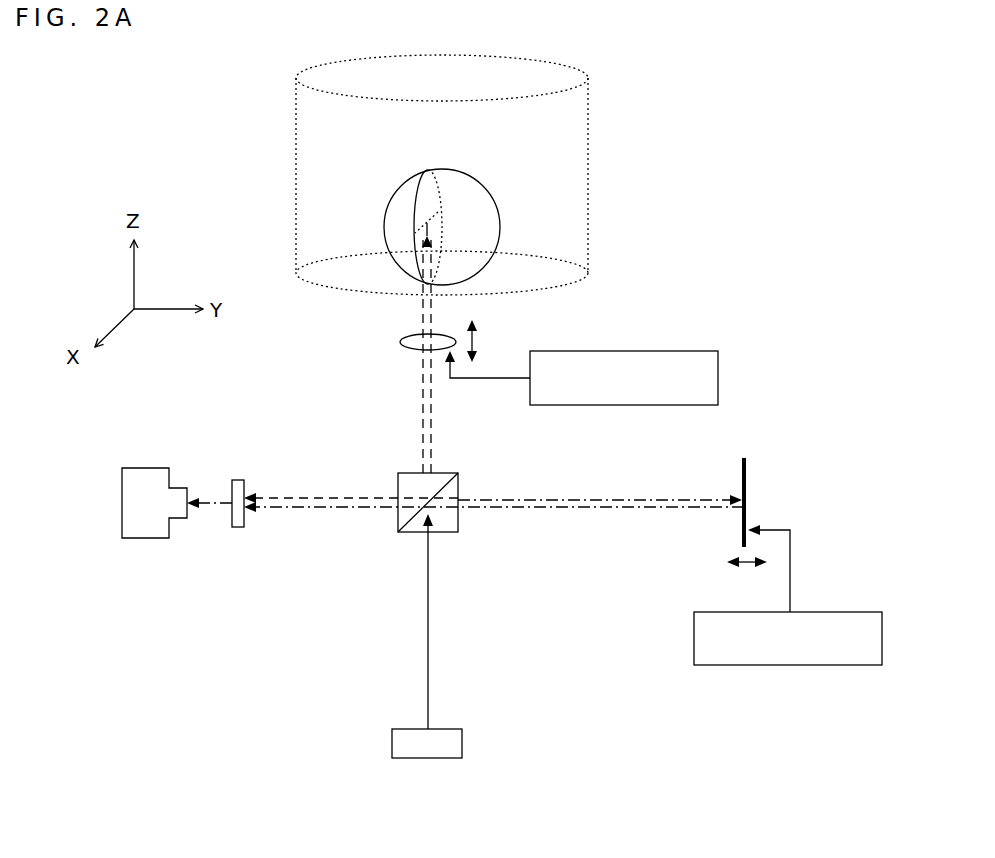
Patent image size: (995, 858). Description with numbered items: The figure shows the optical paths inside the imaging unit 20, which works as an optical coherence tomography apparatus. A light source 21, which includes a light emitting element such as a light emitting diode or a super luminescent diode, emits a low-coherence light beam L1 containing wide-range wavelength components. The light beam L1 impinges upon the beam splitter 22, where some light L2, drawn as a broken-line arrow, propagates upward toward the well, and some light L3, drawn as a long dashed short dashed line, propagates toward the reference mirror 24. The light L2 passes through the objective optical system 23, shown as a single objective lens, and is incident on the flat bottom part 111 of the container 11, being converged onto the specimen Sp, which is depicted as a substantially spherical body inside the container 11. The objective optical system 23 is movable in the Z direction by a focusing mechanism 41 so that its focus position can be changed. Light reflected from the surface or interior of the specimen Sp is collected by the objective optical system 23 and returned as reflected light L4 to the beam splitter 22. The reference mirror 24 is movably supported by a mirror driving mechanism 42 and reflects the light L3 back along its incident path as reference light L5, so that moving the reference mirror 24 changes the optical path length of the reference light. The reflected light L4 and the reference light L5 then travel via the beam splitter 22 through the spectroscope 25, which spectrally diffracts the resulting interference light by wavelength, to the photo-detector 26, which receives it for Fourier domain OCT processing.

The container 11 is at (296, 140).
The bottom part 111 is at (557, 263).
The specimen Sp is at (493, 199).
The imaging unit 20 is at (320, 683).
The light source 21 is at (462, 745).
The beam splitter 22 is at (412, 532).
The objective optical system 23 is at (400, 342).
The reference mirror 24 is at (747, 478).
The spectroscope 25 is at (237, 480).
The photo-detector 26 is at (152, 538).
The focusing mechanism 41 is at (690, 351).
The mirror driving mechanism 42 is at (842, 612).
The light beam L1 is at (428, 652).
The light L2 is at (430, 428).
The light L3 is at (614, 500).
The reflected light L4 is at (420, 445).
The reference light L5 is at (580, 510).